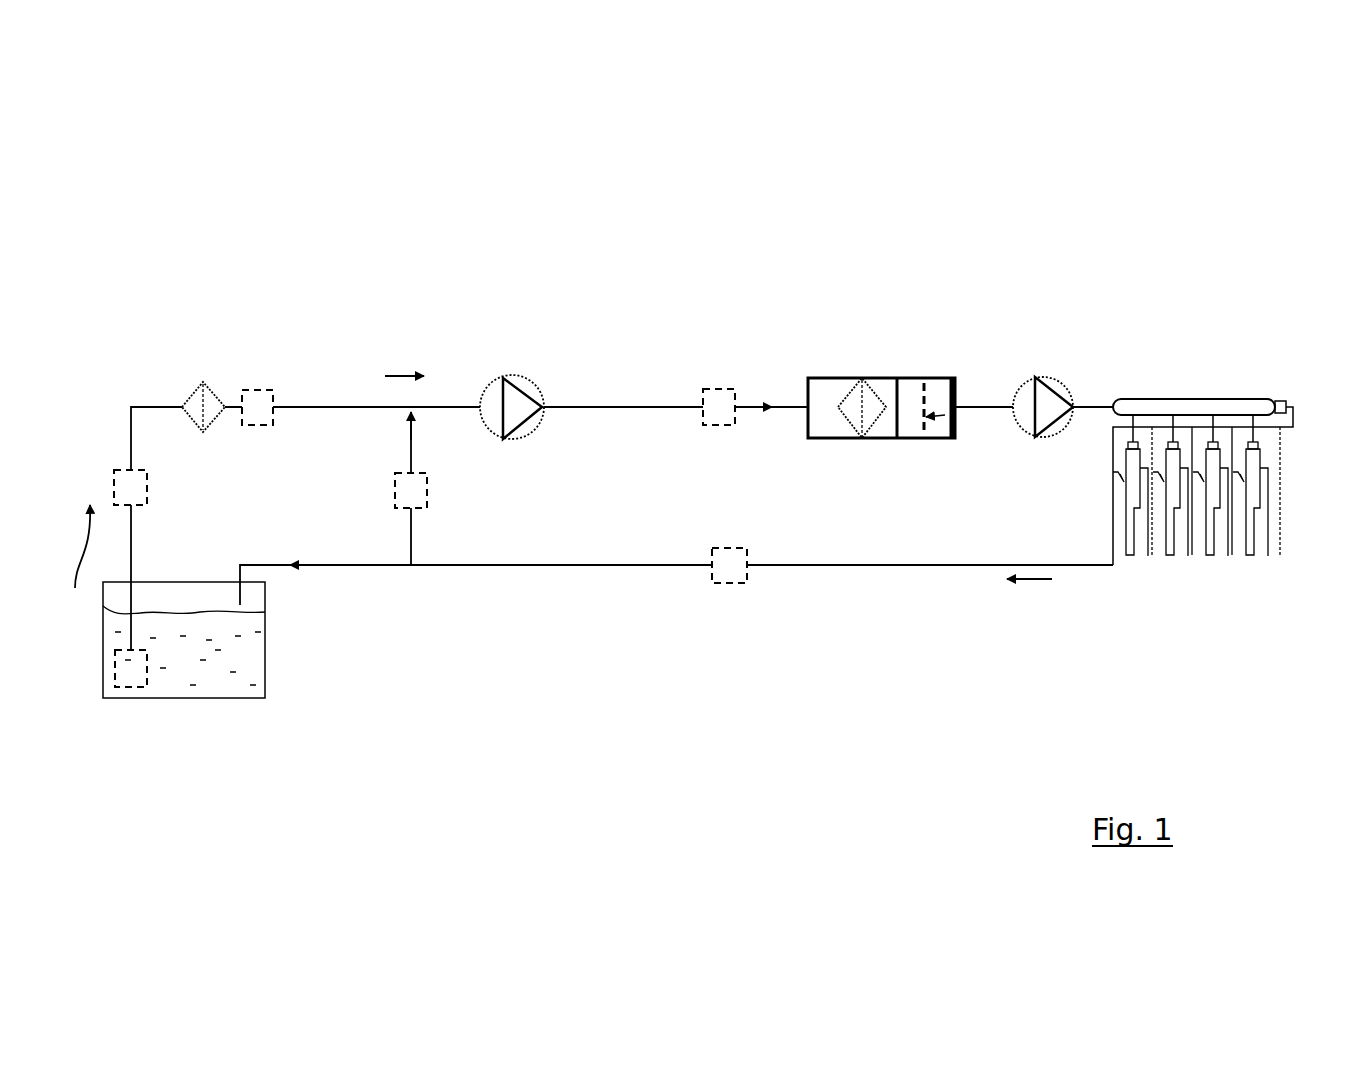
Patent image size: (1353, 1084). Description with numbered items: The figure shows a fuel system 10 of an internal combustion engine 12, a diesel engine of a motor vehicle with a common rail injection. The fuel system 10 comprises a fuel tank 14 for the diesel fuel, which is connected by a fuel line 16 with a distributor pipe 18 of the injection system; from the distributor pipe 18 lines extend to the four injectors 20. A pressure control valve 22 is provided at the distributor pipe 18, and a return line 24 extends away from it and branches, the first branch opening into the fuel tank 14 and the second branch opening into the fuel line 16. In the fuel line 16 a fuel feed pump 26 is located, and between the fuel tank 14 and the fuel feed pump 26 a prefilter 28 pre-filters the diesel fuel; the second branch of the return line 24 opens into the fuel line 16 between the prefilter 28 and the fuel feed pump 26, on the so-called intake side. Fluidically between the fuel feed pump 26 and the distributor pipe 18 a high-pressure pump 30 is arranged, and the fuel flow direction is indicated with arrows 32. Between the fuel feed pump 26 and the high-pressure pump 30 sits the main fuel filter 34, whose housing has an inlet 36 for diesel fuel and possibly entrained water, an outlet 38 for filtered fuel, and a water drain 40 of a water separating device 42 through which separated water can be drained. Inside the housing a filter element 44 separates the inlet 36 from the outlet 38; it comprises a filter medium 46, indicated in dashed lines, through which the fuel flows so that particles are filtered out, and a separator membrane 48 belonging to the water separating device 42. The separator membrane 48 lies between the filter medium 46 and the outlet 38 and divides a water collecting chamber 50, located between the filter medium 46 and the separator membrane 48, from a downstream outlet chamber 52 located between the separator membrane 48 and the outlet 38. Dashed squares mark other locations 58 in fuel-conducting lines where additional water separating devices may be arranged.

The fuel system 10 is at (131, 396).
The internal combustion engine 12 is at (1237, 278).
The fuel tank 14 is at (250, 677).
The fuel line 16 is at (668, 407).
The distributor pipe 18 is at (1237, 407).
The injectors 20 is at (1253, 545).
The pressure control valve 22 is at (1277, 400).
The return line 24 is at (527, 565).
The fuel feed pump 26 is at (513, 380).
The prefilter 28 is at (197, 392).
The high-pressure pump 30 is at (1053, 385).
The arrows 32 is at (410, 371).
The main fuel filter 34 is at (883, 368).
The inlet 36 is at (805, 407).
The outlet 38 is at (958, 405).
The water drain 40 is at (907, 432).
The water separating device 42 is at (957, 430).
The filter element 44 is at (852, 397).
The filter medium 46 is at (860, 412).
The separator membrane 48 is at (935, 432).
The water collecting chamber 50 is at (905, 427).
The outlet chamber 52 is at (938, 390).
The other locations 58 is at (260, 400).